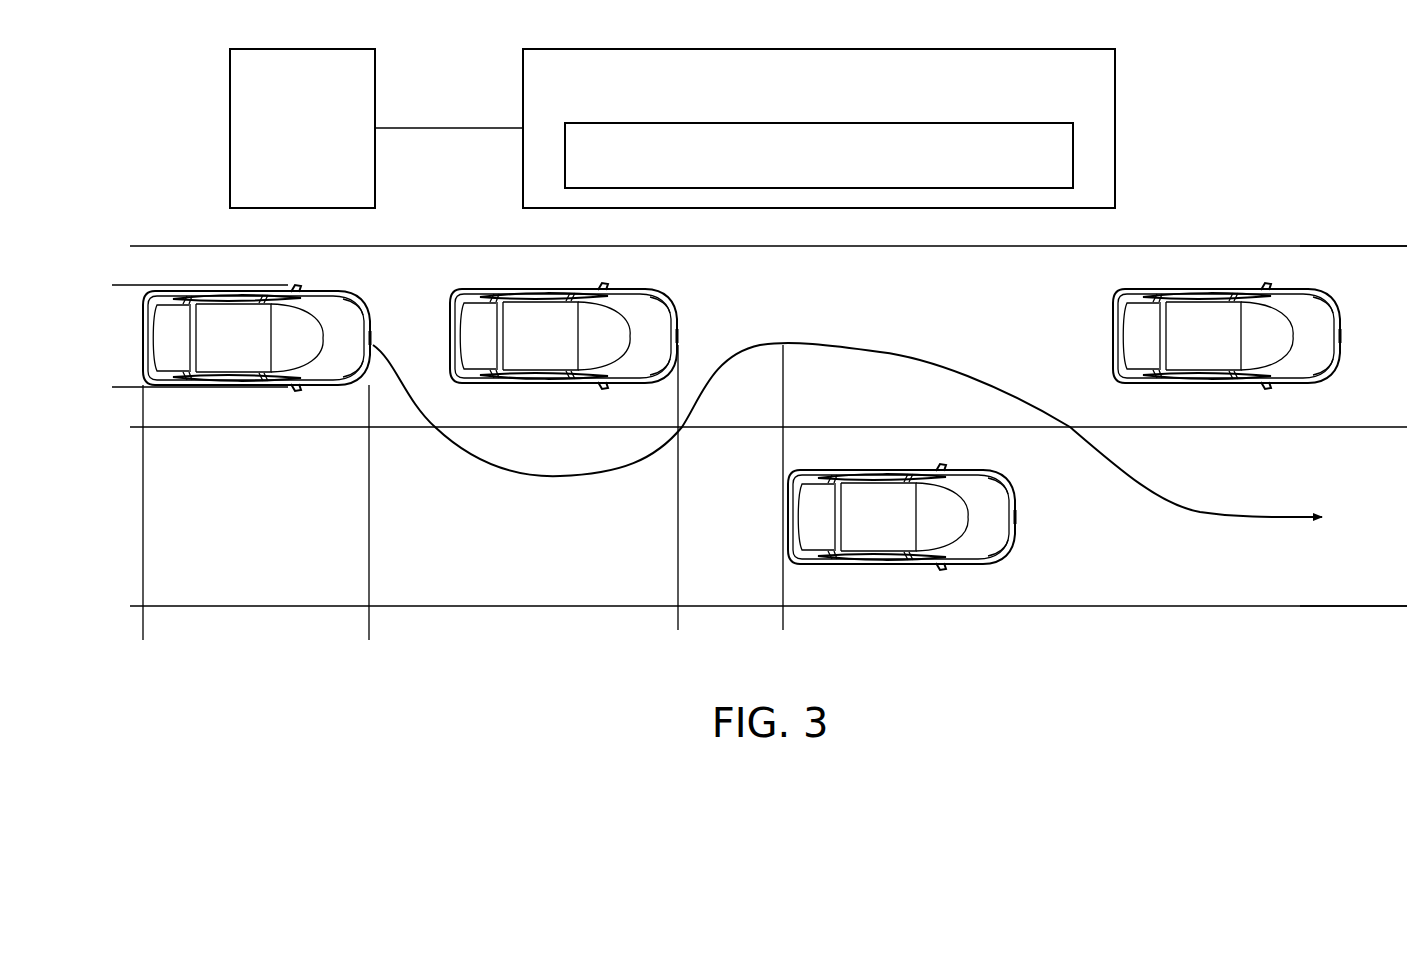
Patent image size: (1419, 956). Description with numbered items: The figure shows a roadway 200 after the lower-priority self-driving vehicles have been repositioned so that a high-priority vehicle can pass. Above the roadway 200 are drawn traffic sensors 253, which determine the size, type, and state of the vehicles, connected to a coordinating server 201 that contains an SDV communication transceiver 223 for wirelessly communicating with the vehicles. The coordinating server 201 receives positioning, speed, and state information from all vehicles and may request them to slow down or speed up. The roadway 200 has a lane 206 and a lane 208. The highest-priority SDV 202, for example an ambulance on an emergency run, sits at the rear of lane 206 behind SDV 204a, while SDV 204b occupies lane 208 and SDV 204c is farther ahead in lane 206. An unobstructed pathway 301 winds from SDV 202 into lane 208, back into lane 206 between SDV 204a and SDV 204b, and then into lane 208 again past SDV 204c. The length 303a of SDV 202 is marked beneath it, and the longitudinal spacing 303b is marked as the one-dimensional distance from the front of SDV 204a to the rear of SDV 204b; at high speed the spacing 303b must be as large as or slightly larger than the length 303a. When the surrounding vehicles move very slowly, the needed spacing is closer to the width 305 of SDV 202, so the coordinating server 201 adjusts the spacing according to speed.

The roadway 200 is at (476, 656).
The coordinating server 201 is at (819, 128).
The SDV 202 is at (256, 338).
The SDV 204a is at (563, 336).
The SDV 204b is at (901, 517).
The SDV 204c is at (1226, 336).
The lane 206 is at (1353, 300).
The lane 208 is at (1353, 543).
The SDV communication transceiver 223 is at (819, 155).
The traffic sensors 253 is at (376, 128).
The unobstructed pathway 301 is at (927, 356).
The length 303a is at (369, 636).
The longitudinal spacing 303b is at (815, 625).
The width 305 is at (114, 287).